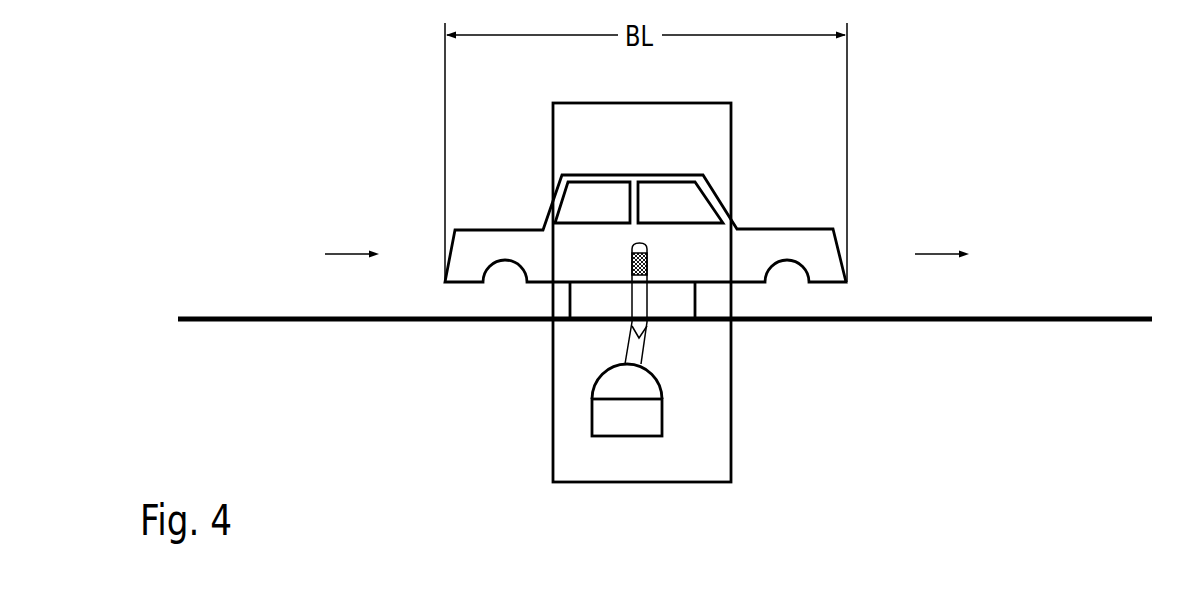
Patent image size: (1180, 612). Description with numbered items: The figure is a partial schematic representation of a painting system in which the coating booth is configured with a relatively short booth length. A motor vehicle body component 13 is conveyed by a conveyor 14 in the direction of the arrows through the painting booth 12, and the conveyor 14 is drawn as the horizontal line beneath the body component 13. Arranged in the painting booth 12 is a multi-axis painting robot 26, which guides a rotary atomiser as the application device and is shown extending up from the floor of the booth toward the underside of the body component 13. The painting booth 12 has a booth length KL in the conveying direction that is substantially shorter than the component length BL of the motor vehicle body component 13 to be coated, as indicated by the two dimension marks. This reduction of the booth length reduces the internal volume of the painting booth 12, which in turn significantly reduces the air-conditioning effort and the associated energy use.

The painting booth 12 is at (732, 408).
The motor vehicle body component 13 is at (510, 229).
The conveyor 14 is at (967, 322).
The multi-axis painting robot 26 is at (625, 450).